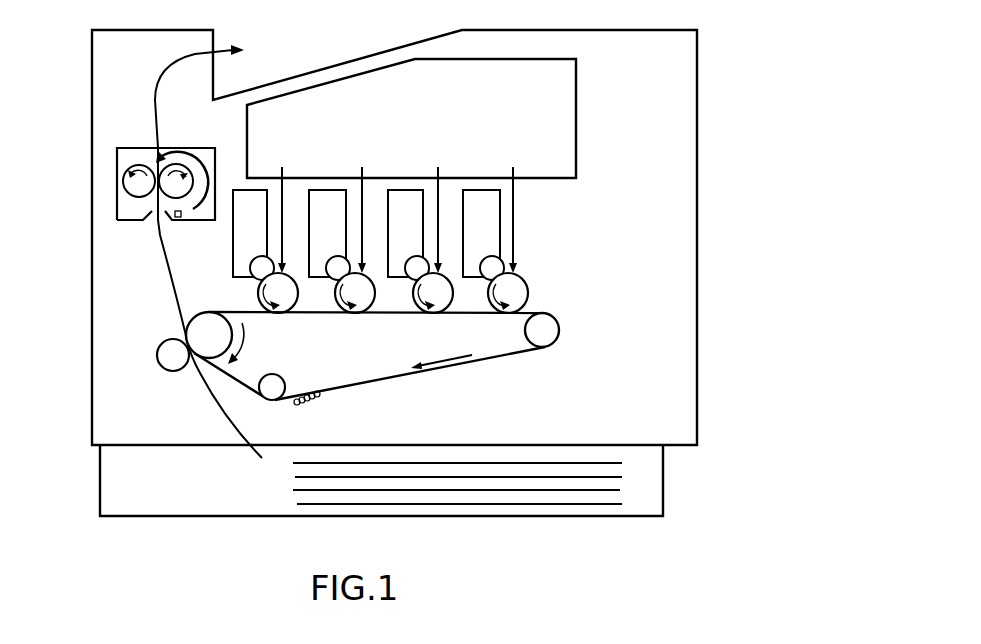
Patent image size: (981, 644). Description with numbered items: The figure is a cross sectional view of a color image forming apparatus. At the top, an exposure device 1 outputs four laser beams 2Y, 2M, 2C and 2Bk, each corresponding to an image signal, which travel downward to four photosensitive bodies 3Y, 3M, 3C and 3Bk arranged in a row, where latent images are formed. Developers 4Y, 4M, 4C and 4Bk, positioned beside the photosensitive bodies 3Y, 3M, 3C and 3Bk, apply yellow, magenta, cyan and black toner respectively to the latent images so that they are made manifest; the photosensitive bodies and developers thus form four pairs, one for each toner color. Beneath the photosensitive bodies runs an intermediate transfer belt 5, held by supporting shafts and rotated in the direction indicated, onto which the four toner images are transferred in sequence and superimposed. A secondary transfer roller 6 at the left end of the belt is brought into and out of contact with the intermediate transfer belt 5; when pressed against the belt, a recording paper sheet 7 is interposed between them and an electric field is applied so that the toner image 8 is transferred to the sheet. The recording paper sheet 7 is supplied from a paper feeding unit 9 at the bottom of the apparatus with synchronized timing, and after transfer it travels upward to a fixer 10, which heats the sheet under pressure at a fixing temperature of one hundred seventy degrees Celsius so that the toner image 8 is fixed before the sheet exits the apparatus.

The exposure device 1 is at (576, 117).
The laser beam 2Y is at (282, 178).
The laser beam 2M is at (362, 178).
The laser beam 2C is at (438, 178).
The laser beam 2Bk is at (513, 178).
The photosensitive body 3Y is at (300, 305).
The photosensitive body 3M is at (377, 305).
The photosensitive body 3C is at (453, 305).
The photosensitive body 3Bk is at (528, 293).
The developer 4Y is at (263, 242).
The developer 4M is at (341, 242).
The developer 4C is at (418, 242).
The developer 4Bk is at (499, 240).
The intermediate transfer belt 5 is at (378, 380).
The secondary transfer roller 6 is at (163, 368).
The recording paper sheet 7 is at (202, 385).
The toner image 8 is at (318, 397).
The paper feeding unit 9 is at (100, 490).
The fixer 10 is at (118, 203).